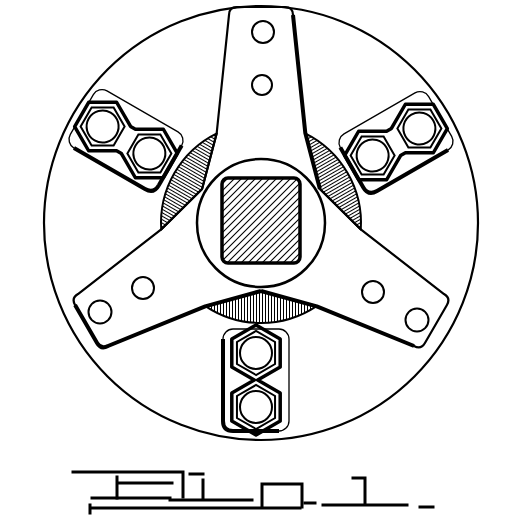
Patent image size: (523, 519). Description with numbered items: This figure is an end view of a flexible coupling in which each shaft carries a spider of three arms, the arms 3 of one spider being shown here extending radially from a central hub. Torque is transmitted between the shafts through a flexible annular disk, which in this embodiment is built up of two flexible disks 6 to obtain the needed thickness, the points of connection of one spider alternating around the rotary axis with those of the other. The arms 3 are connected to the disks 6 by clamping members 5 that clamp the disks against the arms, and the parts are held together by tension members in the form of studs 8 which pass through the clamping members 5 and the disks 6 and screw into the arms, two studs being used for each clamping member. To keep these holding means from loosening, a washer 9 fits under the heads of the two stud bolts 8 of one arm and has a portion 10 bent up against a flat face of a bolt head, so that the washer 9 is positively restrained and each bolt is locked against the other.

The arms 3 is at (259, 176).
The clamping members 5 is at (140, 115).
The flexible disks 6 is at (261, 223).
The studs 8 is at (263, 91).
The washer 9 is at (97, 92).
The bent-up portion 10 is at (90, 140).